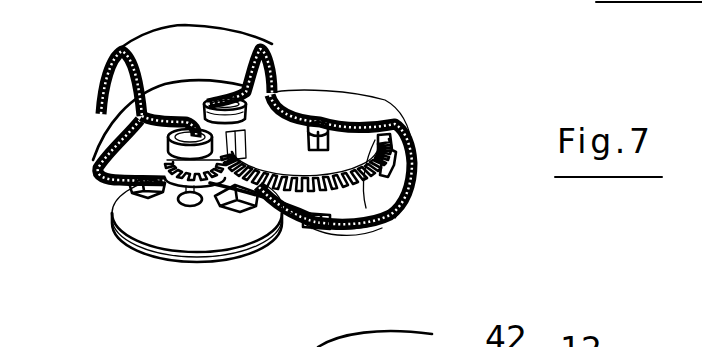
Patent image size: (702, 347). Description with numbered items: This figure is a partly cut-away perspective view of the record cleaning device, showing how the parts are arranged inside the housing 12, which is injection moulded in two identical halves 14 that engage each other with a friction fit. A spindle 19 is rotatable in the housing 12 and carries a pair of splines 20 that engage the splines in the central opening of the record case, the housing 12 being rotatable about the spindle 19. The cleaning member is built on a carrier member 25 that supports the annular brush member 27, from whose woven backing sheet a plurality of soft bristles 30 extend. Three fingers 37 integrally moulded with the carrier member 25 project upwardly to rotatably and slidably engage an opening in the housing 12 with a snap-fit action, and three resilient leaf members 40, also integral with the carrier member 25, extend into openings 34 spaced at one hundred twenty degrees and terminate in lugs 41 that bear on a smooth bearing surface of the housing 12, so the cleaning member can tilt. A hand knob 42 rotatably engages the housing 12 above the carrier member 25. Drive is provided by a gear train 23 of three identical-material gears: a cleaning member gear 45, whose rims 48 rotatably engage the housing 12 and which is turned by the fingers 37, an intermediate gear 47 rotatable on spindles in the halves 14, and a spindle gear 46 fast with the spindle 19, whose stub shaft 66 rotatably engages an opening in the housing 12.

The housing 12 is at (364, 153).
The halves 14 is at (367, 110).
The spindle 19 is at (328, 228).
The splines 20 is at (330, 226).
The gear train 23 is at (375, 153).
The carrier member 25 is at (135, 236).
The brush member 27 is at (288, 222).
The bristles 30 is at (158, 248).
The openings 34 is at (200, 206).
The fingers 37 is at (138, 227).
The resilient members 40 is at (135, 196).
The lugs 41 is at (112, 183).
The hand knob 42 is at (230, 50).
The cleaning member gear 45 is at (160, 125).
The spindle gear 46 is at (405, 222).
The intermediate gear 47 is at (263, 112).
The rims 48 is at (133, 118).
The stub shaft 66 is at (318, 122).